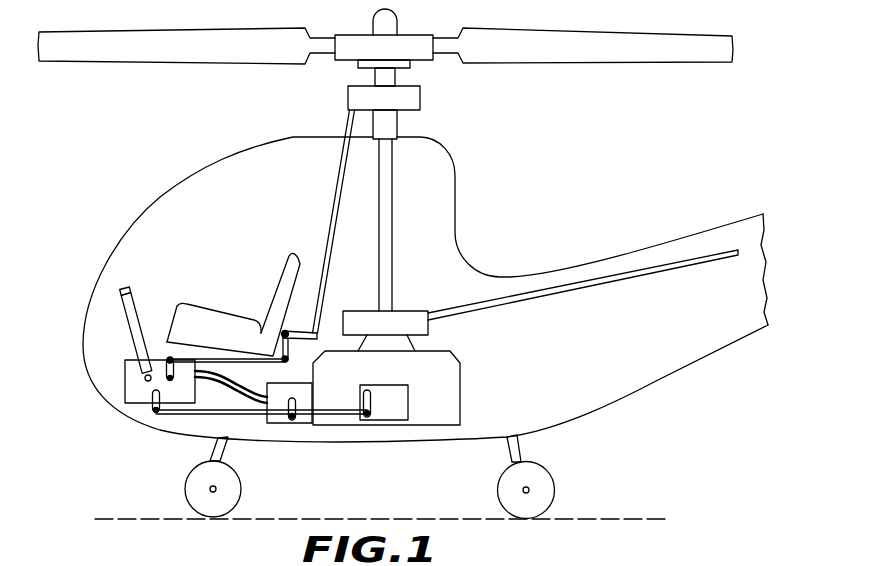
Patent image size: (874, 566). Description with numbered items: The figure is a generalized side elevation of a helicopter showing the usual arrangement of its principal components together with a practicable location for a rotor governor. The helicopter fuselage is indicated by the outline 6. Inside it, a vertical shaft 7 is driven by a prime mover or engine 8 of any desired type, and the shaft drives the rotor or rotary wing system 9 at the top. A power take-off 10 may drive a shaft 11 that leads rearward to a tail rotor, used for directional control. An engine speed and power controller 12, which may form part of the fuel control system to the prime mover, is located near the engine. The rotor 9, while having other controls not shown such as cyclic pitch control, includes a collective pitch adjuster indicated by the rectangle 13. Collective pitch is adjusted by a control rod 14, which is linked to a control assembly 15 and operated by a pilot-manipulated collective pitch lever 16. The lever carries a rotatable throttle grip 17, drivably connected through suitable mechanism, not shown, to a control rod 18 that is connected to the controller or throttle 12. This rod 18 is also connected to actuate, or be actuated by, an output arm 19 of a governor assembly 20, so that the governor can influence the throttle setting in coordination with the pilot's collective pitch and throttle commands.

The helicopter fuselage 6 is at (125, 233).
The vertical shaft 7 is at (393, 253).
The prime mover or engine 8 is at (463, 357).
The rotor or rotary wing system 9 is at (426, 61).
The power take-off 10 is at (428, 333).
The shaft 11 is at (445, 309).
The prime mover or engine speed and power controller 12 is at (372, 398).
The collective pitch adjuster 13 is at (420, 104).
The control rod 14 is at (323, 276).
The control assembly 15 is at (125, 378).
The collective pitch lever 16 is at (135, 313).
The rotatable throttle grip 17 is at (127, 291).
The control rod 18 is at (201, 414).
The output arm 19 is at (297, 405).
The governor assembly 20 is at (298, 386).